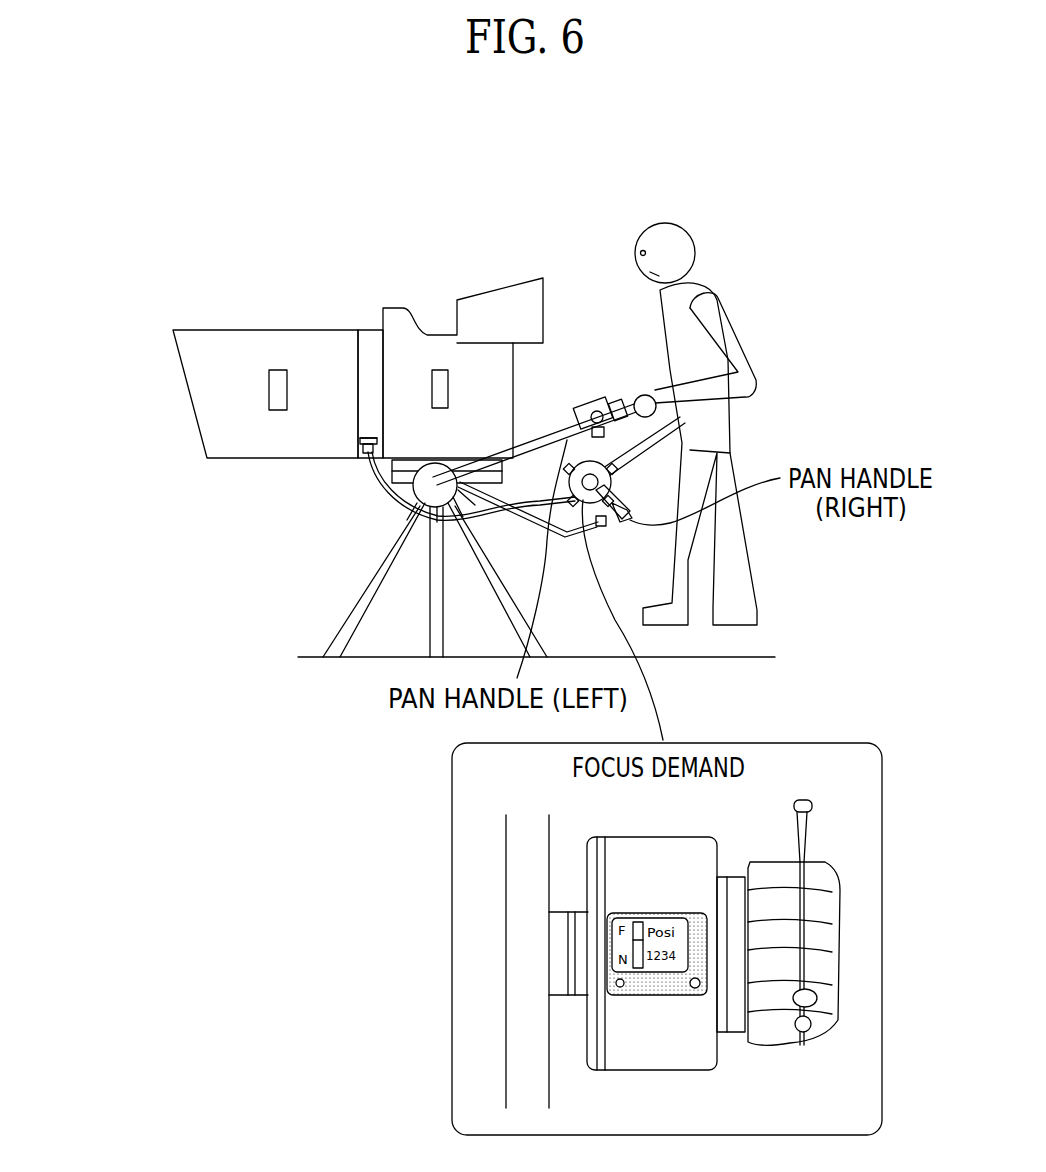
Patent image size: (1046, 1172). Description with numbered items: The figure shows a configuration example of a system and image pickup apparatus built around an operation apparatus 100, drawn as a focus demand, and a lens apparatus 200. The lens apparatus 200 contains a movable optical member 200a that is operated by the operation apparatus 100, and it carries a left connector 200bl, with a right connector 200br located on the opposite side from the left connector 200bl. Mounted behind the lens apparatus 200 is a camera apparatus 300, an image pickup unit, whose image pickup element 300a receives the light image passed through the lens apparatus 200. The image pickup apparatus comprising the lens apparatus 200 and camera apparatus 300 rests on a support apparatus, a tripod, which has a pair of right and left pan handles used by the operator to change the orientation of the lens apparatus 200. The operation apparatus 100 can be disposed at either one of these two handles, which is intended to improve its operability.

The operation apparatus 100 is at (603, 488).
The lens apparatus 200 is at (273, 347).
The movable optical member 200a is at (268, 392).
The left connector 200bl is at (358, 428).
The right connector 200br is at (219, 563).
The camera apparatus 300 is at (423, 352).
The image pickup element 300a is at (449, 389).